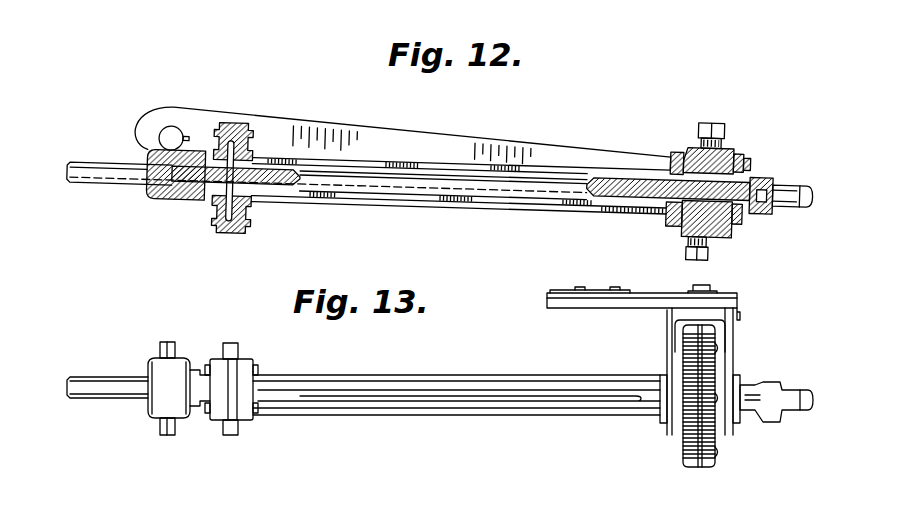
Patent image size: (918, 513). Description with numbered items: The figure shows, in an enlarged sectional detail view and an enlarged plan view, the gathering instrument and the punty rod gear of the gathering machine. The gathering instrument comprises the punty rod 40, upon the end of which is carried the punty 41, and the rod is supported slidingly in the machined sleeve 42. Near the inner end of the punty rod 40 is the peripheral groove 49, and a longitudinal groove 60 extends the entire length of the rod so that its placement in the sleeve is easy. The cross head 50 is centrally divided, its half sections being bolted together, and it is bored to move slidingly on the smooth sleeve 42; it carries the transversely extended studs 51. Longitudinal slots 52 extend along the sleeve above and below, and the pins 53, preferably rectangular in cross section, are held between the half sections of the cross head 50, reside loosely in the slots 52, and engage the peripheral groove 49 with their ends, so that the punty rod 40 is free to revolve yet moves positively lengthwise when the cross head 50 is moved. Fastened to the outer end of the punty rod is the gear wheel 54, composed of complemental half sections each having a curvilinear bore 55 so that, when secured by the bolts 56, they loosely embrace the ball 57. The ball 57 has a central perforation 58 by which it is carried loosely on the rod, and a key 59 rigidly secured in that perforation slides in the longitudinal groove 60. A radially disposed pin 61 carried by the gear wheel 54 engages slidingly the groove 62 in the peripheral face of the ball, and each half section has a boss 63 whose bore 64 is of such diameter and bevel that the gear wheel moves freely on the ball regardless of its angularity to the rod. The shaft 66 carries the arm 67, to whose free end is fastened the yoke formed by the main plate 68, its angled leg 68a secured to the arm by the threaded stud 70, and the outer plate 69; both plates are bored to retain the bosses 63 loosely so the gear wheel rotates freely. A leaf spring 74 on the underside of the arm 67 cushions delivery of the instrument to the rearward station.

In FIG. 12, the punty rod 40 is at (408, 184).
In FIG. 13, the punty rod 40 is at (90, 380).
In FIG. 12, the punty 41 is at (804, 182).
In FIG. 13, the punty 41 is at (800, 386).
In FIG. 12, the machined sleeve 42 is at (458, 227).
In FIG. 13, the machined sleeve 42 is at (510, 380).
In FIG. 12, the peripheral groove 49 is at (274, 154).
In FIG. 13, the cross head 50 is at (258, 375).
In FIG. 13, the transversely extended studs 51 is at (235, 423).
In FIG. 12, the slots 52 is at (459, 173).
In FIG. 13, the slots 52 is at (405, 396).
In FIG. 12, the pins 53 is at (252, 171).
In FIG. 12, the gear wheel 54 is at (736, 107).
In FIG. 13, the gear wheel 54 is at (701, 468).
In FIG. 12, the curvilinear bore 55 is at (651, 238).
In FIG. 12, the bolts 56 is at (730, 132).
In FIG. 13, the bolts 56 is at (720, 348).
In FIG. 12, the ball 57 is at (722, 238).
In FIG. 12, the central perforation 58 is at (670, 126).
In FIG. 12, the key 59 is at (681, 264).
In FIG. 12, the longitudinal groove 60 is at (375, 206).
In FIG. 12, the radially disposed pin 61 is at (772, 143).
In FIG. 12, the groove 62 is at (796, 149).
In FIG. 12, the boss 63 is at (770, 182).
In FIG. 13, the boss 63 is at (742, 378).
In FIG. 12, the bore 64 is at (768, 231).
In FIG. 12, the shaft 66 is at (194, 114).
In FIG. 12, the arm 67 is at (403, 134).
In FIG. 13, the arm 67 is at (594, 306).
In FIG. 13, the main plate 68 is at (668, 345).
In FIG. 13, the leg 68a is at (688, 318).
In FIG. 13, the outer plate 69 is at (735, 333).
In FIG. 13, the threaded stud 70 is at (708, 289).
In FIG. 13, the leaf spring 74 is at (565, 290).